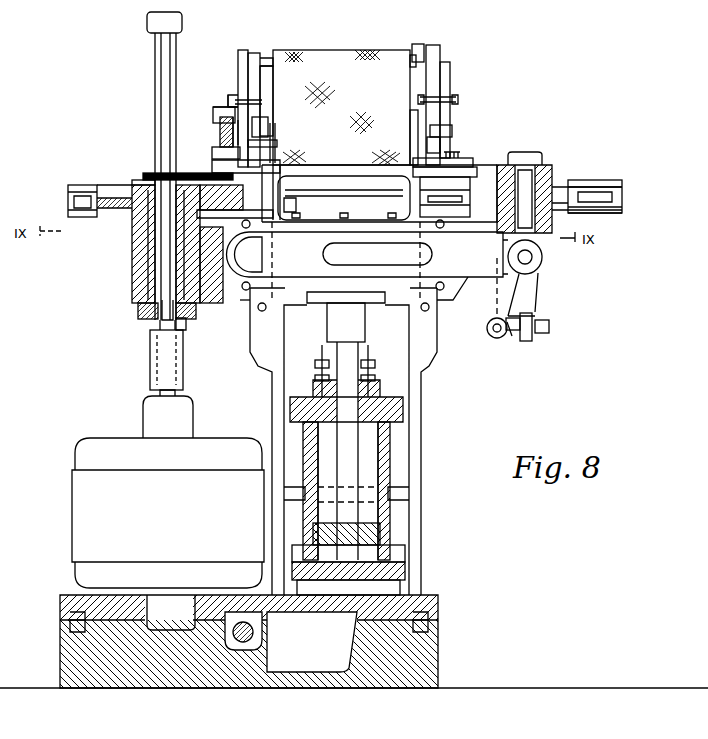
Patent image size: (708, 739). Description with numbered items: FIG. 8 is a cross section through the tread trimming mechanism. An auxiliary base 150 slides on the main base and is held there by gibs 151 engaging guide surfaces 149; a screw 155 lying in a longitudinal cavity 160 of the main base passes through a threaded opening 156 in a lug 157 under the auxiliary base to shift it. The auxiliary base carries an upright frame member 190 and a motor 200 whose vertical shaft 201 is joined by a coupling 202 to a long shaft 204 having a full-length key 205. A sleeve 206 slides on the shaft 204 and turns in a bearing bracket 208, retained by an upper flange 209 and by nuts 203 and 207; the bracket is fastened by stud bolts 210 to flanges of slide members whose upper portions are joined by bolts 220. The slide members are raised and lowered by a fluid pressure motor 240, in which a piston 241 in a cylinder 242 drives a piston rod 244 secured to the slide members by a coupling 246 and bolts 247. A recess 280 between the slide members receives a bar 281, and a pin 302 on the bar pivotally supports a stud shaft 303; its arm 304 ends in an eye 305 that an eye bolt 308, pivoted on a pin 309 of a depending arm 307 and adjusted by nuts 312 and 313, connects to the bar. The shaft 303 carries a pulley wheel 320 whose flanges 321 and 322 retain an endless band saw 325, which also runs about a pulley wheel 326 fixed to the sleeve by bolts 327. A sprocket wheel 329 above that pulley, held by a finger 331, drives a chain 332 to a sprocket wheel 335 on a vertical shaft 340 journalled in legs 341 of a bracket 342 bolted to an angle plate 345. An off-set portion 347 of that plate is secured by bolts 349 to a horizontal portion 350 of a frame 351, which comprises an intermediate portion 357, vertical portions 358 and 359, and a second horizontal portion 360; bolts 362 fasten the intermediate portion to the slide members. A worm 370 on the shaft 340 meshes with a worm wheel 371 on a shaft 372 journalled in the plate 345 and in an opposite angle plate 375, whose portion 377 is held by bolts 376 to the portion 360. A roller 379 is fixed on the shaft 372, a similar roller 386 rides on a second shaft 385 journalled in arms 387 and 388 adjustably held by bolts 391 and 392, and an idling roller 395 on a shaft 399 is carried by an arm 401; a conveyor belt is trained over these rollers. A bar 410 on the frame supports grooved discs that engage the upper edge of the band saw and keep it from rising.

The guide surfaces 149 is at (70, 638).
The auxiliary base 150 is at (428, 600).
The gibs 151 is at (72, 618).
The screw 155 is at (264, 650).
The threaded opening 156 is at (238, 646).
The lug 157 is at (255, 631).
The cavity 160 is at (320, 673).
The frame member 190 is at (410, 556).
The motor 200 is at (73, 536).
The shaft 201 is at (150, 394).
The coupling 202 is at (150, 376).
The nut 203 is at (158, 324).
The shaft 204 is at (160, 335).
The key 205 is at (186, 326).
The sleeve 206 is at (140, 302).
The nut 207 is at (200, 308).
The bearing bracket 208 is at (132, 280).
The flange 209 is at (138, 222).
The stud bolts 210 is at (226, 302).
The bolts 220 is at (262, 358).
The fluid pressure motor 240 is at (390, 452).
The piston 241 is at (392, 538).
The cylinder 242 is at (392, 510).
The piston rod 244 is at (355, 442).
The coupling 246 is at (366, 332).
The bolts 247 is at (324, 345).
The recess 280 is at (262, 316).
The bar 281 is at (462, 290).
The pin 302 is at (542, 258).
The stud shaft 303 is at (550, 166).
The arm 304 is at (545, 290).
The eye 305 is at (535, 338).
The arm 307 is at (488, 331).
The eye bolt 308 is at (514, 338).
The pin 309 is at (498, 340).
The nut 312 is at (550, 326).
The nut 313 is at (538, 315).
The pulley wheel 320 is at (554, 182).
The flange 321 is at (622, 182).
The flange 322 is at (622, 214).
The endless band saw 325 is at (622, 194).
The pulley wheel 326 is at (90, 185).
The bolts 327 is at (150, 184).
The sprocket wheel 329 is at (162, 172).
The finger 331 is at (158, 176).
The chain 332 is at (222, 143).
The sprocket wheel 335 is at (235, 201).
The shaft 340 is at (234, 98).
The legs 341 is at (230, 108).
The bracket 342 is at (242, 96).
The angle plate 345 is at (243, 52).
The off-set portion 347 is at (256, 148).
The bolts 349 is at (222, 153).
The horizontal portion 350 is at (283, 173).
The frame 351 is at (332, 175).
The intermediate portion 357 is at (322, 220).
The vertical portion 358 is at (284, 218).
The vertical portion 359 is at (365, 261).
The horizontal portion 360 is at (408, 165).
The bolts 362 is at (398, 246).
The worm 370 is at (216, 115).
The worm wheel 371 is at (222, 130).
The shaft 372 is at (265, 123).
The angle plate 375 is at (448, 80).
The bolts 376 is at (502, 160).
The portion 377 is at (442, 158).
The roller 379 is at (416, 113).
The second shaft 385 is at (422, 56).
The roller 386 is at (414, 54).
The arm 387 is at (440, 62).
The arm 388 is at (256, 55).
The bolt 391 is at (442, 100).
The bolt 392 is at (257, 101).
The idling roller 395 is at (412, 158).
The shaft 399 is at (446, 140).
The arm 401 is at (250, 152).
The bar 410 is at (468, 170).